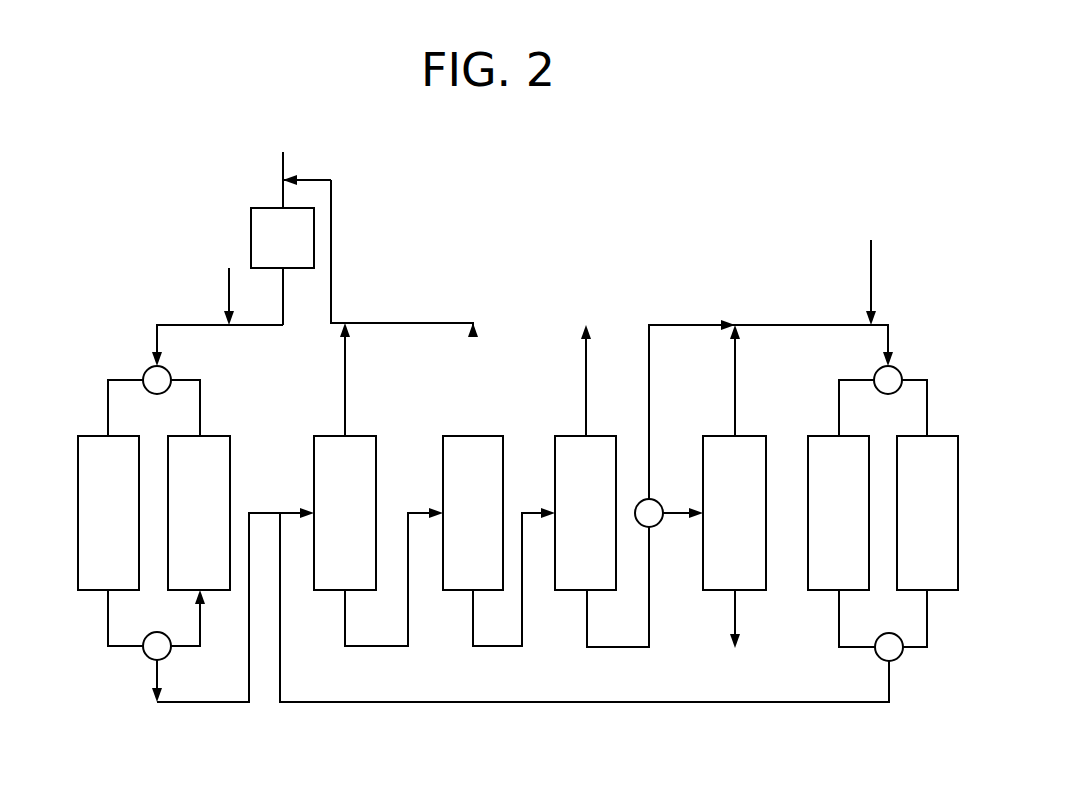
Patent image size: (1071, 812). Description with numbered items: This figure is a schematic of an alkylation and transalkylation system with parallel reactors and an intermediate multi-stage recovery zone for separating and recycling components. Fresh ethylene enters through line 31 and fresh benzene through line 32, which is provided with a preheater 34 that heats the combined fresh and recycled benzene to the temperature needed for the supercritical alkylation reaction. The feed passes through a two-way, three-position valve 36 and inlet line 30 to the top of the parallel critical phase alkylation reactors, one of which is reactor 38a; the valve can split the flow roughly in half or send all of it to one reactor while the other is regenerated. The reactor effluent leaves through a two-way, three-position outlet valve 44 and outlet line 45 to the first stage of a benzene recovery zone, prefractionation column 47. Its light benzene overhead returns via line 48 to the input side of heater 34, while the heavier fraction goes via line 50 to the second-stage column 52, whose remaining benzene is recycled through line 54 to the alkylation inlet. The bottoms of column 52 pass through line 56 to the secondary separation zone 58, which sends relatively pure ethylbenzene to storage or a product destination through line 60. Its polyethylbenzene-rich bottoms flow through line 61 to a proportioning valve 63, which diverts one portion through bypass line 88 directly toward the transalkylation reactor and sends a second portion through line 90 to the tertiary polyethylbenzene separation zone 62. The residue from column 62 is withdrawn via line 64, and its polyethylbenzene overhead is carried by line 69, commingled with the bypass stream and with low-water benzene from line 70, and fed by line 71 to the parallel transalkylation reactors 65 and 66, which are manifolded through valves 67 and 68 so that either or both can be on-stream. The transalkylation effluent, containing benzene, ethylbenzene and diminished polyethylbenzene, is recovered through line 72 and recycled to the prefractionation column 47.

The inlet line 30 is at (186, 323).
The ethylene feed line 31 is at (228, 286).
The fresh benzene line 32 is at (283, 158).
The preheater 34 is at (272, 208).
The two-way, three-position valve 36 is at (158, 394).
The critical phase alkylation reactor 38a is at (214, 436).
The two-way, three-position outlet valve 44 is at (162, 632).
The outlet line 45 is at (225, 702).
The prefractionation column 47 is at (314, 502).
The overhead recycle line 48 is at (345, 375).
The bottoms line 50 is at (352, 644).
The second stage benzene separation column 52 is at (443, 465).
The benzene recycle line 54 is at (397, 323).
The bottoms line 56 is at (511, 646).
The secondary separation zone 58 is at (555, 478).
The ethylbenzene product line 60 is at (586, 380).
The bottoms line 61 is at (631, 647).
The tertiary polyethylbenzene separation zone 62 is at (745, 436).
The proportioning valve 63 is at (643, 525).
The residue withdrawal line 64 is at (737, 612).
The transalkylation reactor 65 is at (808, 543).
The transalkylation reactor 66 is at (914, 591).
The inlet manifold valve 67 is at (901, 372).
The outlet manifold valve 68 is at (900, 658).
The polyethylbenzene overhead line 69 is at (846, 325).
The benzene feed line 70 is at (871, 262).
The transalkylation inlet line 71 is at (888, 322).
The transalkylation effluent line 72 is at (516, 702).
The bypass line 88 is at (649, 360).
The second portion line 90 is at (665, 508).